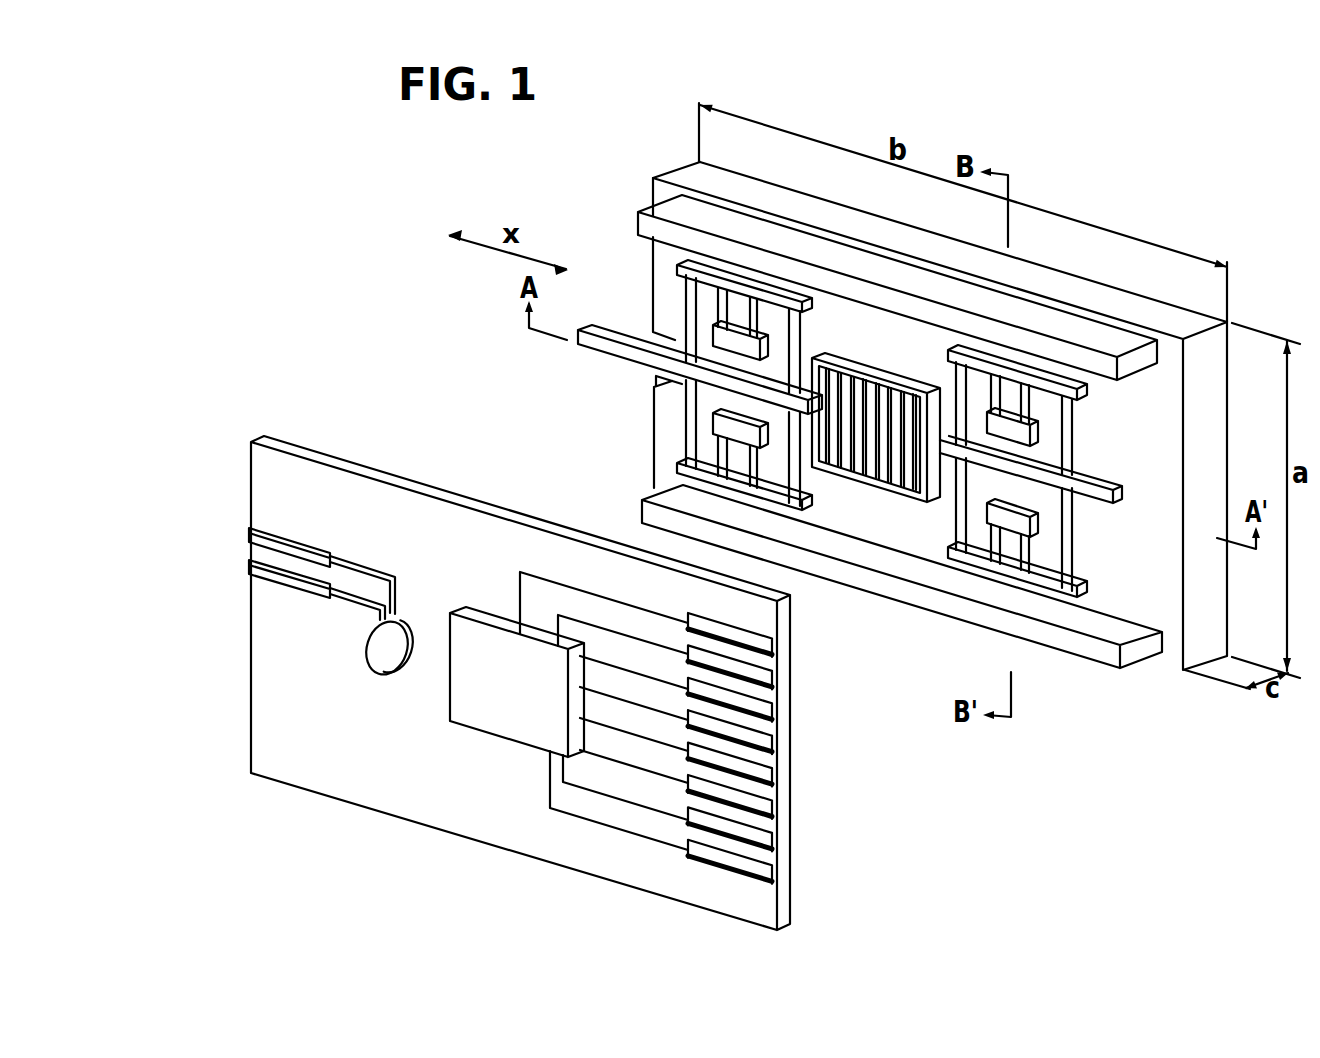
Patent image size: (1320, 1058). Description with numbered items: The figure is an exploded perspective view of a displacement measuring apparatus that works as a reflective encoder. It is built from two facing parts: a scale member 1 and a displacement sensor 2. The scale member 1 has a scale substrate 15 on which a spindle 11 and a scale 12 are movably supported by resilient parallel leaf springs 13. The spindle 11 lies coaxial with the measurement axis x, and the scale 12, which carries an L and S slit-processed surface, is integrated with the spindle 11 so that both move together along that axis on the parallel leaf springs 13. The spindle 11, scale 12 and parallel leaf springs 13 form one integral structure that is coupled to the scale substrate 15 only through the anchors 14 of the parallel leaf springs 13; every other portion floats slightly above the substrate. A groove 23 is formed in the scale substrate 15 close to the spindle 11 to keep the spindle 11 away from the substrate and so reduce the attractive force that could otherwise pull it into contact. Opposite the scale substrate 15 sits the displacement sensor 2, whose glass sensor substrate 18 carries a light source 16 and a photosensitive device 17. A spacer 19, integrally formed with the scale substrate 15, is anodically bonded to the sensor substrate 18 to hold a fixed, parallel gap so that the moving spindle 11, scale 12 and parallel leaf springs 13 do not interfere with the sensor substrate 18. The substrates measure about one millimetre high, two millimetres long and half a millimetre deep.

The scale member 1 is at (605, 207).
The displacement sensor 2 is at (414, 468).
The spindle 11 is at (606, 350).
The scale 12 is at (883, 480).
The parallel leaf springs 13 is at (1072, 448).
The anchors 14 is at (1033, 518).
The scale substrate 15 is at (821, 213).
The light source 16 is at (380, 661).
The photosensitive device 17 is at (483, 723).
The sensor substrate 18 is at (783, 861).
The spacer 19 is at (915, 594).
The groove 23 is at (660, 383).